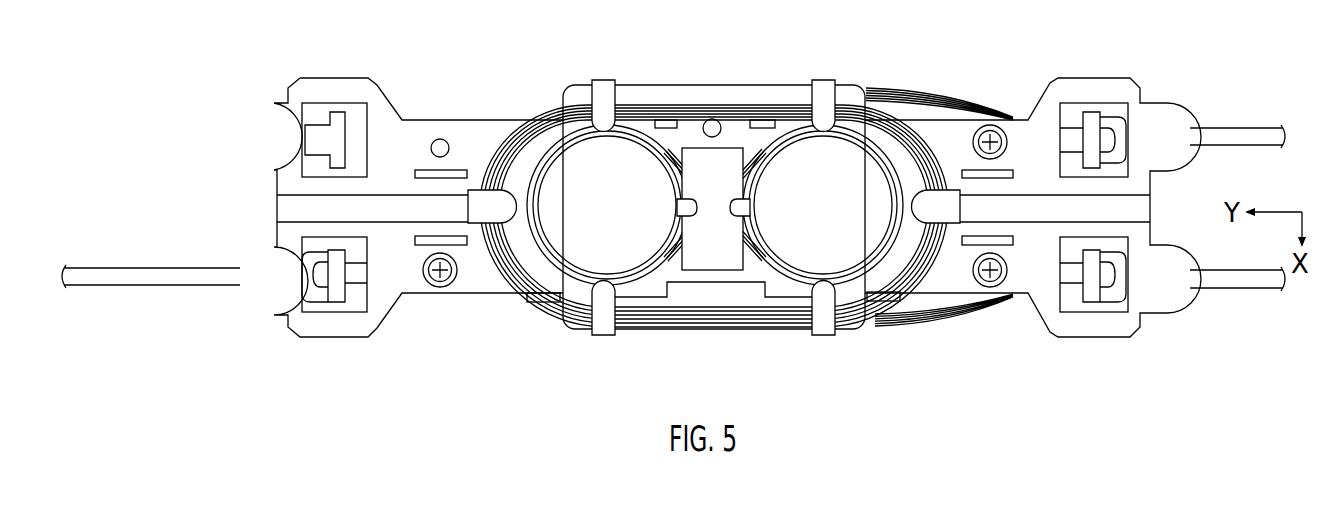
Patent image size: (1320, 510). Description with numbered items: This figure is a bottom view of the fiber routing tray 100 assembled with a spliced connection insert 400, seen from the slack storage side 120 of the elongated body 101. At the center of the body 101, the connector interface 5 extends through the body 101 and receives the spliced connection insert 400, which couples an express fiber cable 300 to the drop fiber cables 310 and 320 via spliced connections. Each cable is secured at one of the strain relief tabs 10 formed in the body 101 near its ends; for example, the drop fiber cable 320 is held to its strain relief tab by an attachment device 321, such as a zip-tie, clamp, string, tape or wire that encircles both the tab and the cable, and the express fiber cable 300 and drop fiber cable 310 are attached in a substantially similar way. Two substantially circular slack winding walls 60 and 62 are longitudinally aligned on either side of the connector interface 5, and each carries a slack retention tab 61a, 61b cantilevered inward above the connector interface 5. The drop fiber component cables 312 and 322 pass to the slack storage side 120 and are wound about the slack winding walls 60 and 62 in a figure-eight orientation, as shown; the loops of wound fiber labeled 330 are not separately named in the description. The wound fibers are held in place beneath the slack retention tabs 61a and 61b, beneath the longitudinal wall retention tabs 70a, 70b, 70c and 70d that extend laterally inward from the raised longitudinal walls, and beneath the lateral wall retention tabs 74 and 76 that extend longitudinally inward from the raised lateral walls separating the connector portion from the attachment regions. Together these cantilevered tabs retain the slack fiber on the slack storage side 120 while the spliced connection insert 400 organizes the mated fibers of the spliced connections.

The connector interface 5 is at (729, 140).
The strain relief tab 10 is at (1097, 130).
The slack winding wall 60 is at (770, 250).
The slack retention tab 61a is at (750, 207).
The slack retention tab 61b is at (676, 206).
The slack winding wall 62 is at (538, 205).
The longitudinal wall retention tab 70a is at (824, 88).
The longitudinal wall retention tab 70b is at (604, 92).
The longitudinal wall retention tab 70c is at (823, 330).
The longitudinal wall retention tab 70d is at (605, 330).
The lateral wall retention tab 74 is at (943, 203).
The lateral wall retention tab 76 is at (479, 215).
The fiber routing tray 100 is at (673, 197).
The body 101 is at (737, 183).
The slack storage side 120 is at (725, 197).
The express fiber cable 300 is at (160, 285).
The drop fiber cable 310 is at (1227, 280).
The drop fiber component cable 312 is at (960, 312).
The drop fiber cable 320 is at (1241, 135).
The attachment device 321 is at (1122, 135).
The drop fiber component cable 322 is at (944, 100).
The fiber loop 330 is at (503, 145).
The spliced connection insert 400 is at (710, 257).